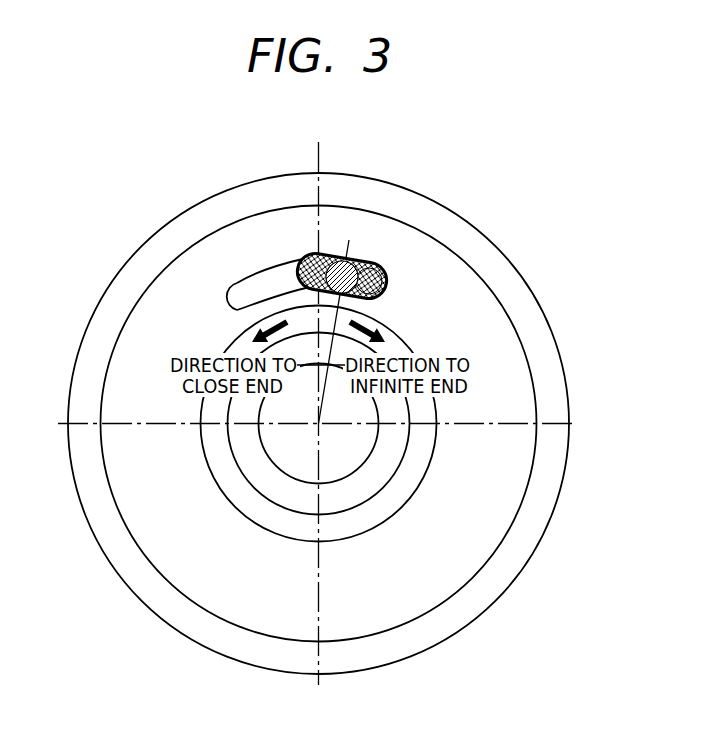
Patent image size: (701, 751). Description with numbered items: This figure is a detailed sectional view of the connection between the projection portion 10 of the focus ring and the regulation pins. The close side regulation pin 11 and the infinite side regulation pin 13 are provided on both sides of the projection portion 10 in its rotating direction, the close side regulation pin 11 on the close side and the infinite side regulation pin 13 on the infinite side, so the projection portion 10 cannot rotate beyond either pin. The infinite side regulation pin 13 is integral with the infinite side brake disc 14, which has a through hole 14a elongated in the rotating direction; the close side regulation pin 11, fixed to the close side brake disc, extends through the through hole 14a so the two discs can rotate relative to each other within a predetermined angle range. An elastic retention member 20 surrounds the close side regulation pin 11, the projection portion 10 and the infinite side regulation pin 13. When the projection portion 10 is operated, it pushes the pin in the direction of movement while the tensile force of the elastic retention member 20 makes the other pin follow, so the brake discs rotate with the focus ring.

The projection portion 10 is at (358, 257).
The close side regulation pin 11 is at (308, 258).
The infinite side regulation pin 13 is at (377, 268).
The infinite side brake disc 14 is at (247, 237).
The through hole 14a is at (235, 290).
The elastic retention member 20 is at (331, 257).